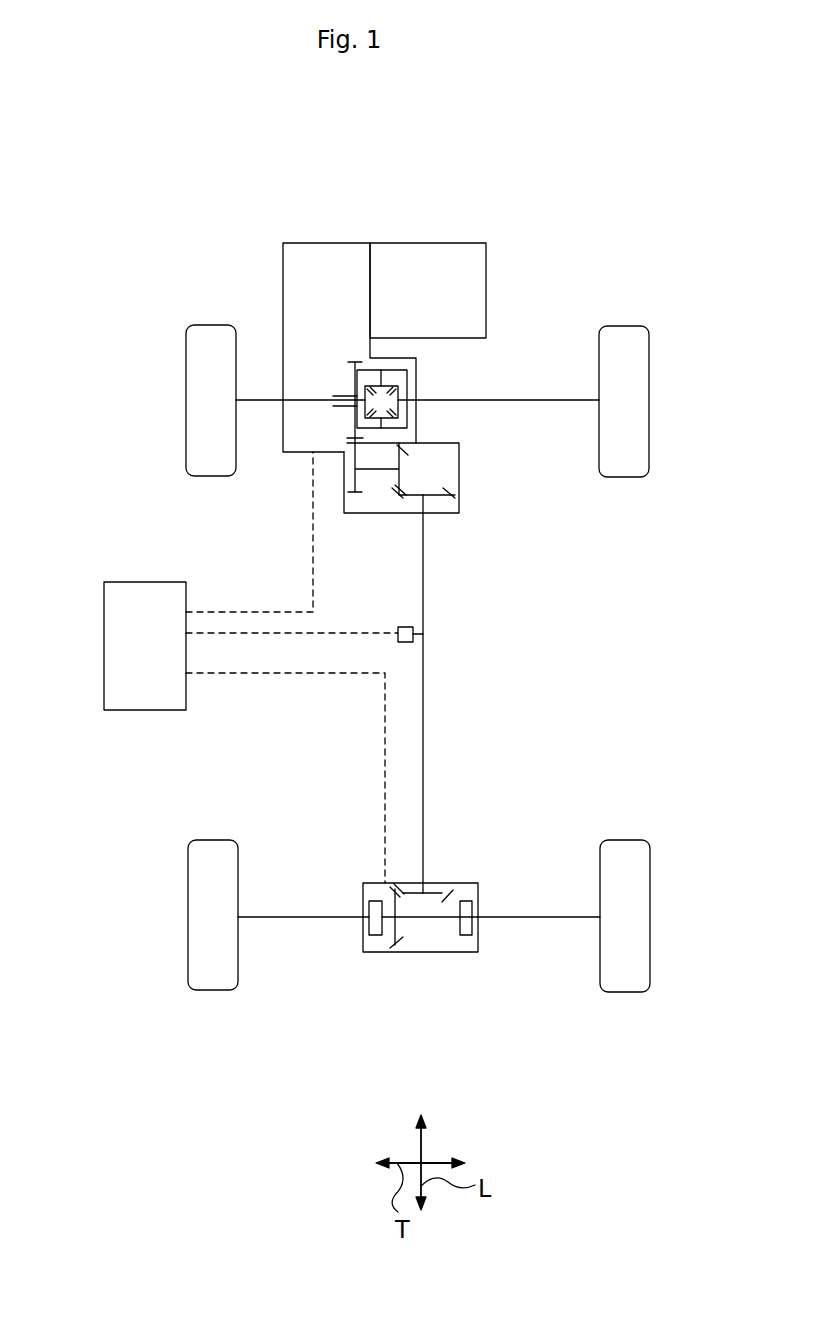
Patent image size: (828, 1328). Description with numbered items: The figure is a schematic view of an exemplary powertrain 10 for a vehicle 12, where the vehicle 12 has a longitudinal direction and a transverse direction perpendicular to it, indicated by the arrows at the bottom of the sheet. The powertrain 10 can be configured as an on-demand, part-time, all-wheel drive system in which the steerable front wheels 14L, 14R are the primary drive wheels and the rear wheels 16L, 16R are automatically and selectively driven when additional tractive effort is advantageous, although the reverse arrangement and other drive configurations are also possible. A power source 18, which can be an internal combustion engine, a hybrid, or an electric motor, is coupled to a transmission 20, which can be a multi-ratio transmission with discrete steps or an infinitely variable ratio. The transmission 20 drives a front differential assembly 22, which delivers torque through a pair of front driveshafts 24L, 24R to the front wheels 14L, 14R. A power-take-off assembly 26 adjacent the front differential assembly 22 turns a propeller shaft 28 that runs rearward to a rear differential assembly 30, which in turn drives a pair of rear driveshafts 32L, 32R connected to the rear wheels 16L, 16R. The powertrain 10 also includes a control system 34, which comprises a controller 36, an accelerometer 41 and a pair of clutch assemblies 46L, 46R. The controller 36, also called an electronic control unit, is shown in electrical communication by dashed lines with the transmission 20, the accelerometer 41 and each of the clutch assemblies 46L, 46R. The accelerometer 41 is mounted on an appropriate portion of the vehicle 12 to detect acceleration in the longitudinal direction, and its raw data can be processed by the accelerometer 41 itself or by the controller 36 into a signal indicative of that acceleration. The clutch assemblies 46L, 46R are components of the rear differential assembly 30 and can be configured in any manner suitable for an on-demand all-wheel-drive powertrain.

The powertrain 10 is at (472, 190).
The vehicle 12 is at (175, 190).
The front wheel 14L is at (208, 325).
The front wheel 14R is at (625, 326).
The rear wheel 16L is at (210, 990).
The rear wheel 16R is at (622, 992).
The power source 18 is at (426, 243).
The transmission 20 is at (317, 243).
The front differential assembly 22 is at (407, 384).
The front driveshaft 24L is at (258, 400).
The front driveshaft 24R is at (542, 400).
The power-take-off assembly 26 is at (459, 476).
The propeller shaft 28 is at (423, 768).
The rear differential assembly 30 is at (420, 952).
The rear driveshaft 32L is at (305, 917).
The rear driveshaft 32R is at (537, 917).
The control system 34 is at (106, 556).
The controller 36 is at (251, 667).
The accelerometer 41 is at (405, 627).
The clutch assembly 46L is at (375, 936).
The clutch assembly 46R is at (466, 936).